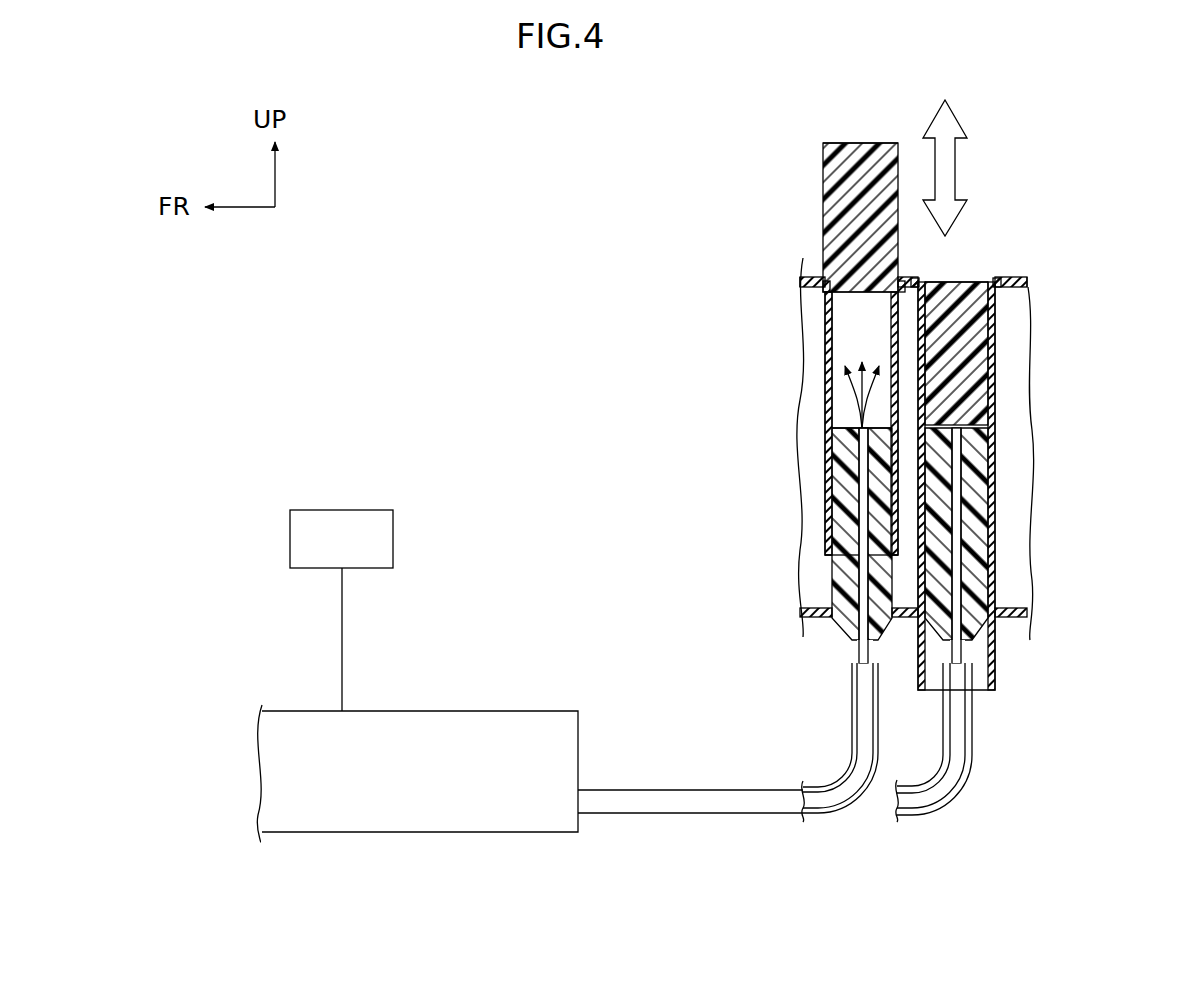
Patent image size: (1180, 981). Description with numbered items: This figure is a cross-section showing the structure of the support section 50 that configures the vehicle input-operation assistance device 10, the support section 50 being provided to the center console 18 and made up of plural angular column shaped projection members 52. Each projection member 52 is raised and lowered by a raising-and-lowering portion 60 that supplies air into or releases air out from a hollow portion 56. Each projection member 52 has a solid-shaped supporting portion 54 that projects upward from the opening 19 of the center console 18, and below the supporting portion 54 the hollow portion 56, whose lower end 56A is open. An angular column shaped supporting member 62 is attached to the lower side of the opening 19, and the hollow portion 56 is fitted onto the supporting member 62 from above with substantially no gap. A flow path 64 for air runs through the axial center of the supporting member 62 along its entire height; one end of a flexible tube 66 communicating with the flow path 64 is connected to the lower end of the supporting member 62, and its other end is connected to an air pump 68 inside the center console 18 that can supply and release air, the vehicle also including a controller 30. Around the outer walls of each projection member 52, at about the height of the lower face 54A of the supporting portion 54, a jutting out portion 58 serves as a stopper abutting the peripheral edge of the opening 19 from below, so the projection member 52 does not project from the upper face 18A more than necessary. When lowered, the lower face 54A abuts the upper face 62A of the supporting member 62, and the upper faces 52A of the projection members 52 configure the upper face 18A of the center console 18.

The vehicle input-operation assistance device 10 is at (490, 201).
The center console 18 is at (1022, 279).
The upper face of the center console 18A is at (1030, 282).
The opening 19 is at (821, 284).
The controller 30 is at (290, 537).
The support section 50 is at (789, 164).
The projection member 52 is at (872, 141).
The upper face of the projection member 52A is at (845, 142).
The supporting portion 54 is at (823, 212).
The lower face of the supporting portion 54A is at (830, 320).
The hollow portion 56 is at (845, 340).
The lower end of the hollow portion 56A is at (828, 566).
The jutting out portion 58 is at (826, 296).
The raising-and-lowering portion 60 is at (311, 852).
The supporting member 62 is at (842, 640).
The upper face of the supporting member 62A is at (830, 408).
The flow path 64 is at (870, 492).
The flexible tube 66 is at (745, 815).
The air pump 68 is at (460, 818).